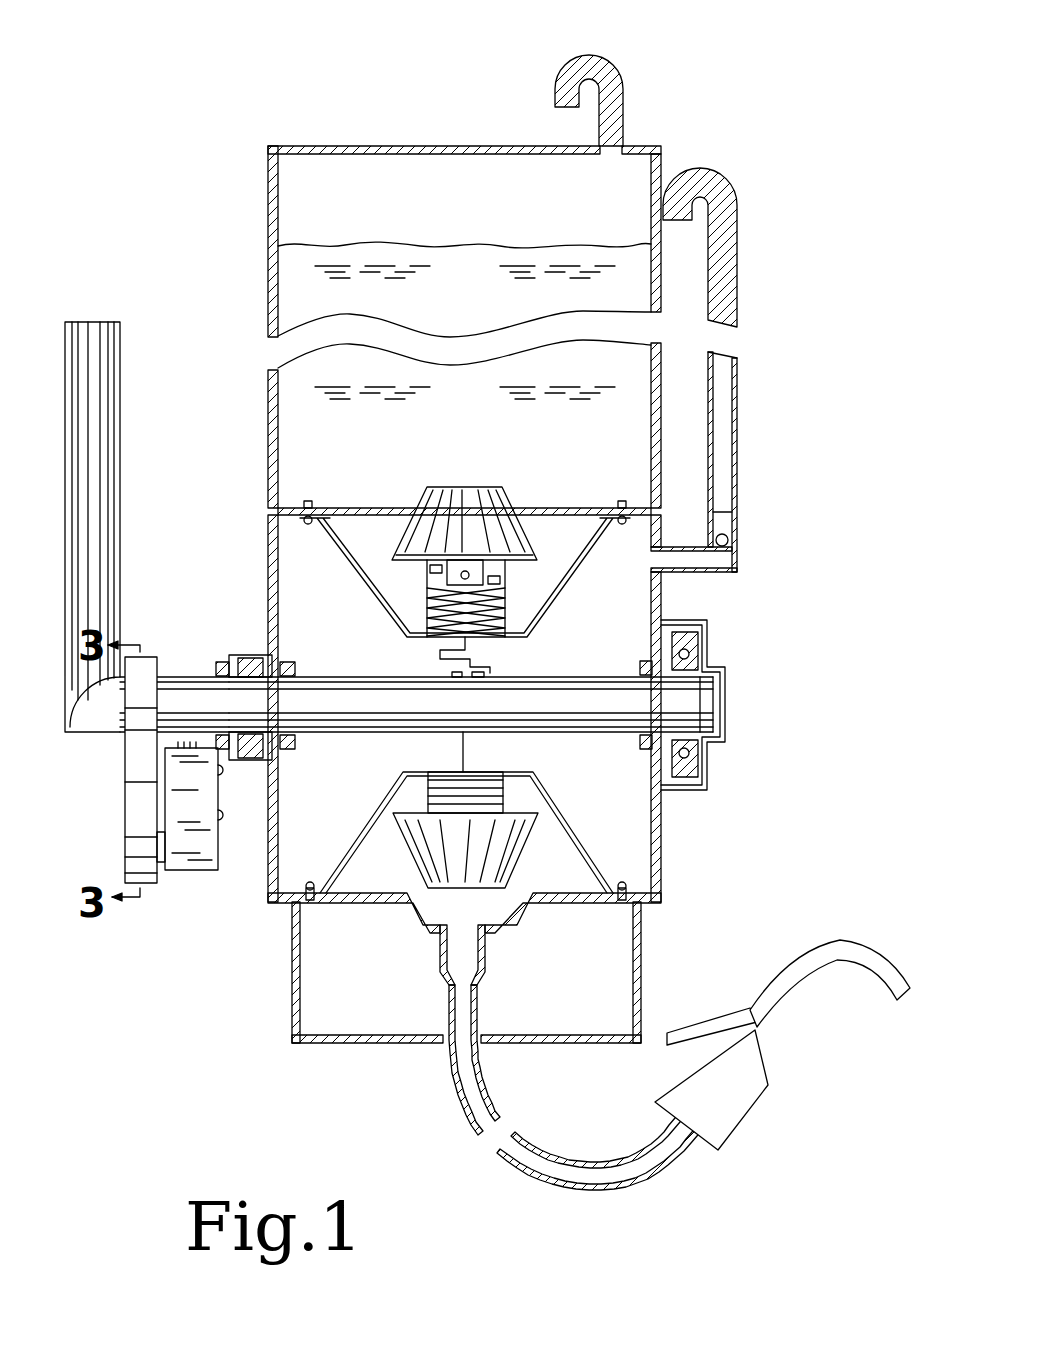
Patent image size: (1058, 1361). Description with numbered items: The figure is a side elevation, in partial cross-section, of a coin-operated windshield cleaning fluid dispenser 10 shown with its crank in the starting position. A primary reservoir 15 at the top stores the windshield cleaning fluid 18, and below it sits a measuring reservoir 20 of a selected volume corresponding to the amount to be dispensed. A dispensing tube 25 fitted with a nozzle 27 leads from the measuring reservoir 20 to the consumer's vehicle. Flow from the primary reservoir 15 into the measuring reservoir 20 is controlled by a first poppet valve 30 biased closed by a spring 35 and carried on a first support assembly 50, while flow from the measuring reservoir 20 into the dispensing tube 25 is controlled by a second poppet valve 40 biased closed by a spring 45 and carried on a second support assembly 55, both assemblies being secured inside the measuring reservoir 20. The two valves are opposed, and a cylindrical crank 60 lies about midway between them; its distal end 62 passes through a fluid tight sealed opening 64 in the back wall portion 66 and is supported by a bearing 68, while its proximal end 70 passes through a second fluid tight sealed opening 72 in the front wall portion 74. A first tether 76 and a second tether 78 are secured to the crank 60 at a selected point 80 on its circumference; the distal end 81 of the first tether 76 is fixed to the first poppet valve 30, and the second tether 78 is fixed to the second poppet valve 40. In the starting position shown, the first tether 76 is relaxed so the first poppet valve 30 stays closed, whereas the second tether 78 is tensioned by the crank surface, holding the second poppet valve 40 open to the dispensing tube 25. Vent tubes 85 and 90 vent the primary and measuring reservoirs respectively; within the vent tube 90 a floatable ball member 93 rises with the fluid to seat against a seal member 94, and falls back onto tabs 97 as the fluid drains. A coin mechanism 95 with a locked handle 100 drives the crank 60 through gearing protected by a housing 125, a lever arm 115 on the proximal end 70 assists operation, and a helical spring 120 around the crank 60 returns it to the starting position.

The windshield cleaning fluid dispenser 10 is at (181, 135).
The primary reservoir 15 is at (362, 146).
The windshield cleaning fluid 18 is at (298, 407).
The measuring reservoir 20 is at (265, 529).
The dispensing tube 25 is at (458, 1093).
The nozzle 27 is at (830, 942).
The first poppet valve 30 is at (463, 493).
The spring 35 is at (483, 621).
The second poppet valve 40 is at (470, 860).
The spring 45 is at (498, 785).
The first support assembly 50 is at (553, 592).
The second support assembly 55 is at (572, 835).
The crank 60 is at (355, 700).
The distal end 62 is at (695, 703).
The fluid tight sealed opening 64 is at (640, 668).
The back wall portion 66 is at (665, 843).
The bearing 68 is at (697, 747).
The proximal end 70 is at (196, 704).
The second fluid tight sealed opening 72 is at (305, 662).
The front wall portion 74 is at (272, 623).
The first tether 76 is at (492, 660).
The second tether 78 is at (466, 749).
The selected point 80 is at (440, 653).
The distal end 81 is at (498, 579).
The vent tube 85 is at (607, 67).
The vent tube 90 is at (700, 185).
The floatable ball member 93 is at (728, 537).
The seal member 94 is at (723, 512).
The coin mechanism 95 is at (200, 847).
The tabs 97 is at (737, 570).
The handle 100 is at (163, 847).
The lever arm 115 is at (95, 418).
The helical spring 120 is at (253, 760).
The housing 125 is at (140, 822).